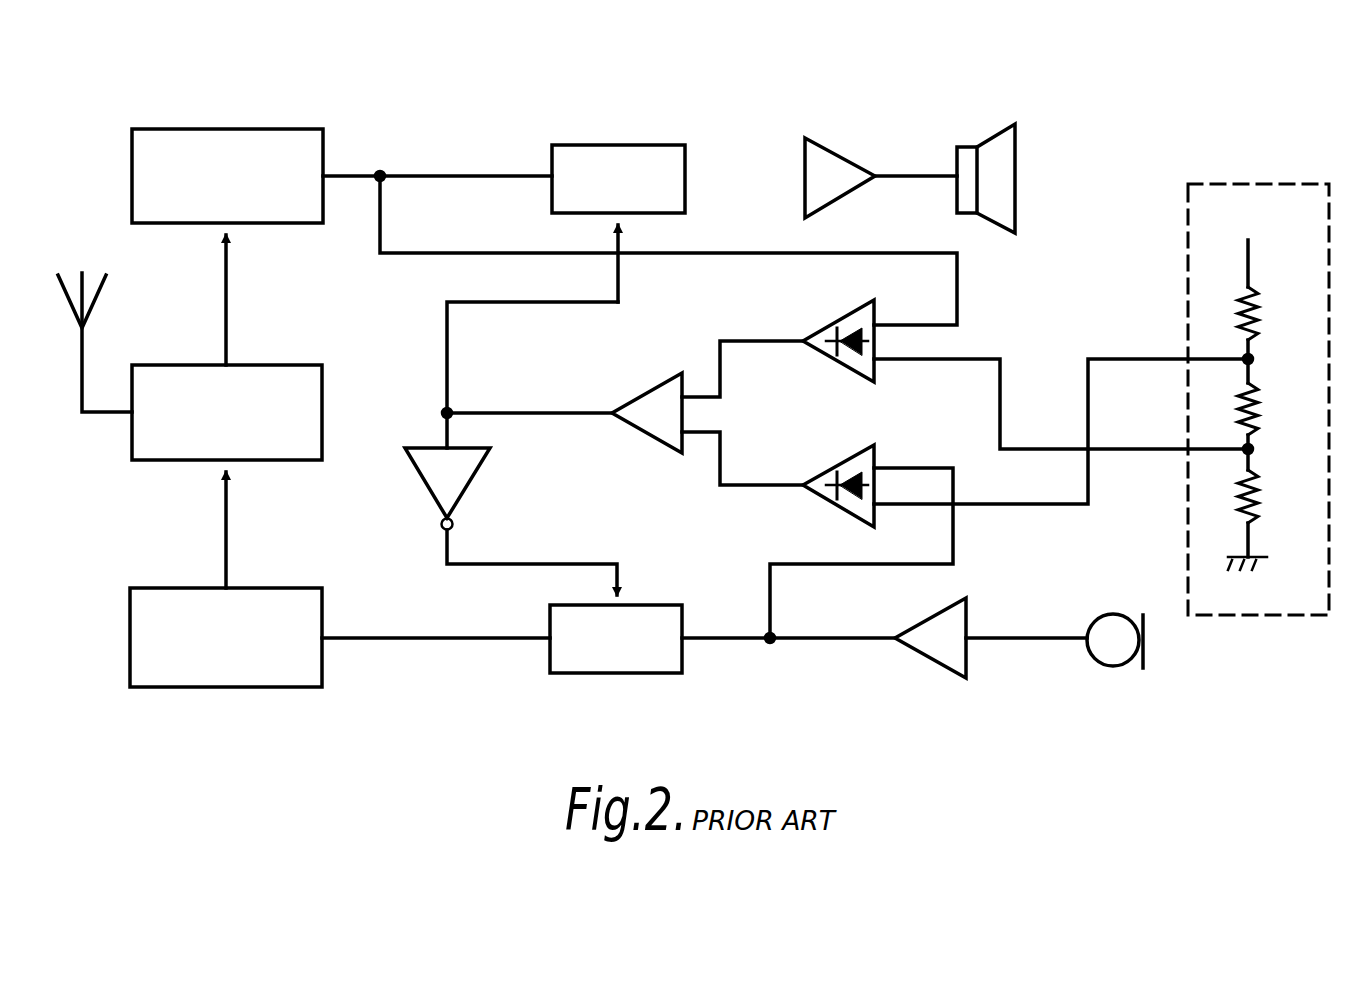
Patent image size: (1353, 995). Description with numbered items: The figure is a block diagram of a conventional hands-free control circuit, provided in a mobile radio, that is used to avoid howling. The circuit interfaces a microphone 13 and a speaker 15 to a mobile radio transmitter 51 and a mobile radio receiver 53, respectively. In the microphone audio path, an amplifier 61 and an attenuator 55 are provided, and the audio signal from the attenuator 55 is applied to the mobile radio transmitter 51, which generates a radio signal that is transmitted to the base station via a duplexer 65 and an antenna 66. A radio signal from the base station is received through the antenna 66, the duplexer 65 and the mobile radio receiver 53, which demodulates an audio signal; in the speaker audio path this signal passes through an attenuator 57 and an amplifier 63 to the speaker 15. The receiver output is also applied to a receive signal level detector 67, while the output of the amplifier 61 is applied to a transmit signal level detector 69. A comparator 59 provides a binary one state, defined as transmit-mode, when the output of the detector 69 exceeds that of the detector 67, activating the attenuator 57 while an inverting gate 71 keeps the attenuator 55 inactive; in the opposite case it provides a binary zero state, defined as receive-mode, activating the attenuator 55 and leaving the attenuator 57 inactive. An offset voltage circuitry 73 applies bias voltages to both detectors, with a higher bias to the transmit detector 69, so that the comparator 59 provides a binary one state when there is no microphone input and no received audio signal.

The microphone 13 is at (1115, 668).
The speaker 15 is at (996, 135).
The mobile radio transmitter 51 is at (243, 689).
The mobile radio receiver 53 is at (266, 128).
The attenuator 55 is at (630, 675).
The attenuator 57 is at (620, 144).
The comparator 59 is at (648, 388).
The amplifier 61 is at (935, 665).
The amplifier 63 is at (832, 148).
The duplexer 65 is at (272, 364).
The antenna 66 is at (98, 300).
The receive signal level detector 67 is at (830, 325).
The transmit signal level detector 69 is at (830, 470).
The inverting gate 71 is at (475, 478).
The offset voltage circuitry 73 is at (1275, 183).